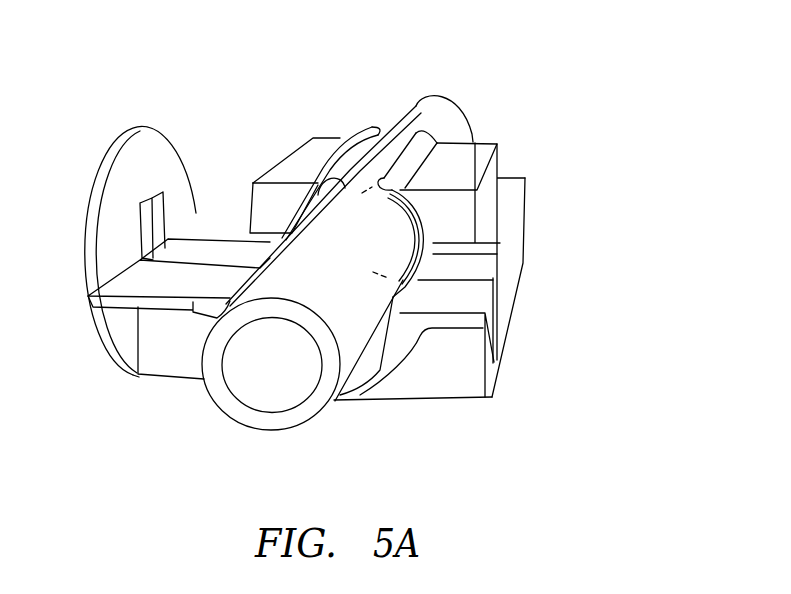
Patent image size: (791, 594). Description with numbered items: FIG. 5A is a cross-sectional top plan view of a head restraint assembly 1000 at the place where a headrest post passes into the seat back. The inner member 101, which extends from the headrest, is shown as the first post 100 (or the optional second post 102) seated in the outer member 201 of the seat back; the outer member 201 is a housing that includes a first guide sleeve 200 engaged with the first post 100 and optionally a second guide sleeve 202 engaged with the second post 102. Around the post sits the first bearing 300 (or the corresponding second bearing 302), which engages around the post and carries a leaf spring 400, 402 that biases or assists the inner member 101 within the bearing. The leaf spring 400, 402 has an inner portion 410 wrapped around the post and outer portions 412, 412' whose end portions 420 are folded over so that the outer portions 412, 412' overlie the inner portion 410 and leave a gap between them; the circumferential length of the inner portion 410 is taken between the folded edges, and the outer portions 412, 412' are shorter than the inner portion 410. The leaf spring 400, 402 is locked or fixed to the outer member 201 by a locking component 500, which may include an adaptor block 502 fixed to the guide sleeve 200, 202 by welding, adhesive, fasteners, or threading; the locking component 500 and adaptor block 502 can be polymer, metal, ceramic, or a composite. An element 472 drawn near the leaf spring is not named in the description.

The clip assembly 1000 is at (654, 96).
The first post 100 is at (379, 228).
The second post 102 is at (443, 103).
The inner member 101 is at (455, 147).
The first leaf spring 400 is at (440, 137).
The second leaf spring 402 is at (363, 130).
The end portion 420 is at (382, 126).
The bend of strap 472 is at (320, 180).
The inner portion 410 is at (165, 248).
The outer portion 412 is at (488, 197).
The outer portion 412' is at (497, 355).
The locking component 500 is at (293, 134).
The adaptor block 502 is at (465, 152).
The first bearing 300 is at (236, 135).
The second bearing 302 is at (310, 137).
The first guide sleeve 200 is at (385, 281).
The second guide sleeve 202 is at (500, 218).
The outer member 201 is at (495, 398).